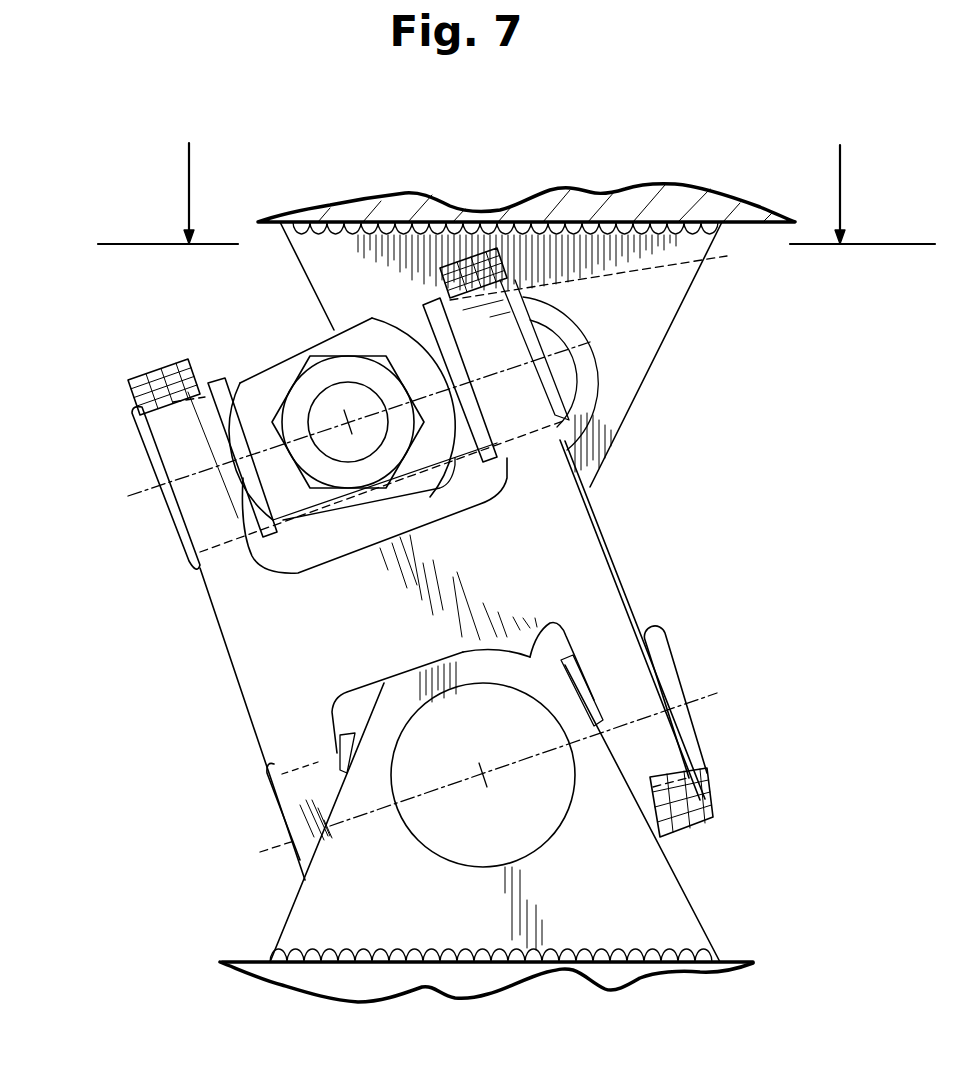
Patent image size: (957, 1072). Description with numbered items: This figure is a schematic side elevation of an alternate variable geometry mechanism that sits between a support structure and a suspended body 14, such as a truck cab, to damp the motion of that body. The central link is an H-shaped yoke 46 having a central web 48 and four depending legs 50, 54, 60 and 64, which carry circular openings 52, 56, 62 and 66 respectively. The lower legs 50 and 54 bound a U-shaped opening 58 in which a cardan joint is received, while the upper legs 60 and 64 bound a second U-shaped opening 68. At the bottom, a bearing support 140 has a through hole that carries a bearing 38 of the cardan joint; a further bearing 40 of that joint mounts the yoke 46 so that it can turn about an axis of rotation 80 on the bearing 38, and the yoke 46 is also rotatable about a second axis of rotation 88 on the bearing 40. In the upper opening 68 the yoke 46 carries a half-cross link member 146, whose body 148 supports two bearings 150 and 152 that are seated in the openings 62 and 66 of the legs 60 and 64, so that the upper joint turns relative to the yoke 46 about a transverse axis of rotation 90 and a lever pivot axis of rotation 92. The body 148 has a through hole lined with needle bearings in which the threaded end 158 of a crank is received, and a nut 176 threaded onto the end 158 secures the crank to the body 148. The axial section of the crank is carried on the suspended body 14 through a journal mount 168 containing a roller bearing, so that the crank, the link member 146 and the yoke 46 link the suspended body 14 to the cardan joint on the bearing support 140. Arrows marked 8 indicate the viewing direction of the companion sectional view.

The section view line 8 is at (516, 193).
The suspended body 14 is at (313, 248).
The bearing 38 is at (543, 813).
The bearing 40 is at (300, 857).
The H-shaped yoke 46 is at (215, 623).
The central web 48 is at (533, 562).
The leg 50 is at (310, 793).
The circular opening 52 is at (336, 757).
The leg 54 is at (713, 808).
The circular opening 56 is at (593, 663).
The U-shaped opening 58 is at (560, 633).
The leg 60 is at (158, 370).
The circular opening 62 is at (128, 394).
The leg 64 is at (490, 250).
The opening 66 is at (603, 266).
The U-shaped opening 68 is at (318, 568).
The axis of rotation 80 is at (485, 775).
The axis of rotation 88 is at (717, 693).
The transverse axis of rotation 90 is at (590, 342).
The lever pivot axis of rotation 92 is at (348, 422).
The bearing support 140 is at (580, 930).
The half-cross link member 146 is at (228, 356).
The body 148 is at (237, 380).
The bearing 150 is at (155, 455).
The bearing 152 is at (533, 324).
The end of crank 158 is at (355, 397).
The journal mount 168 is at (682, 283).
The nut 176 is at (334, 330).